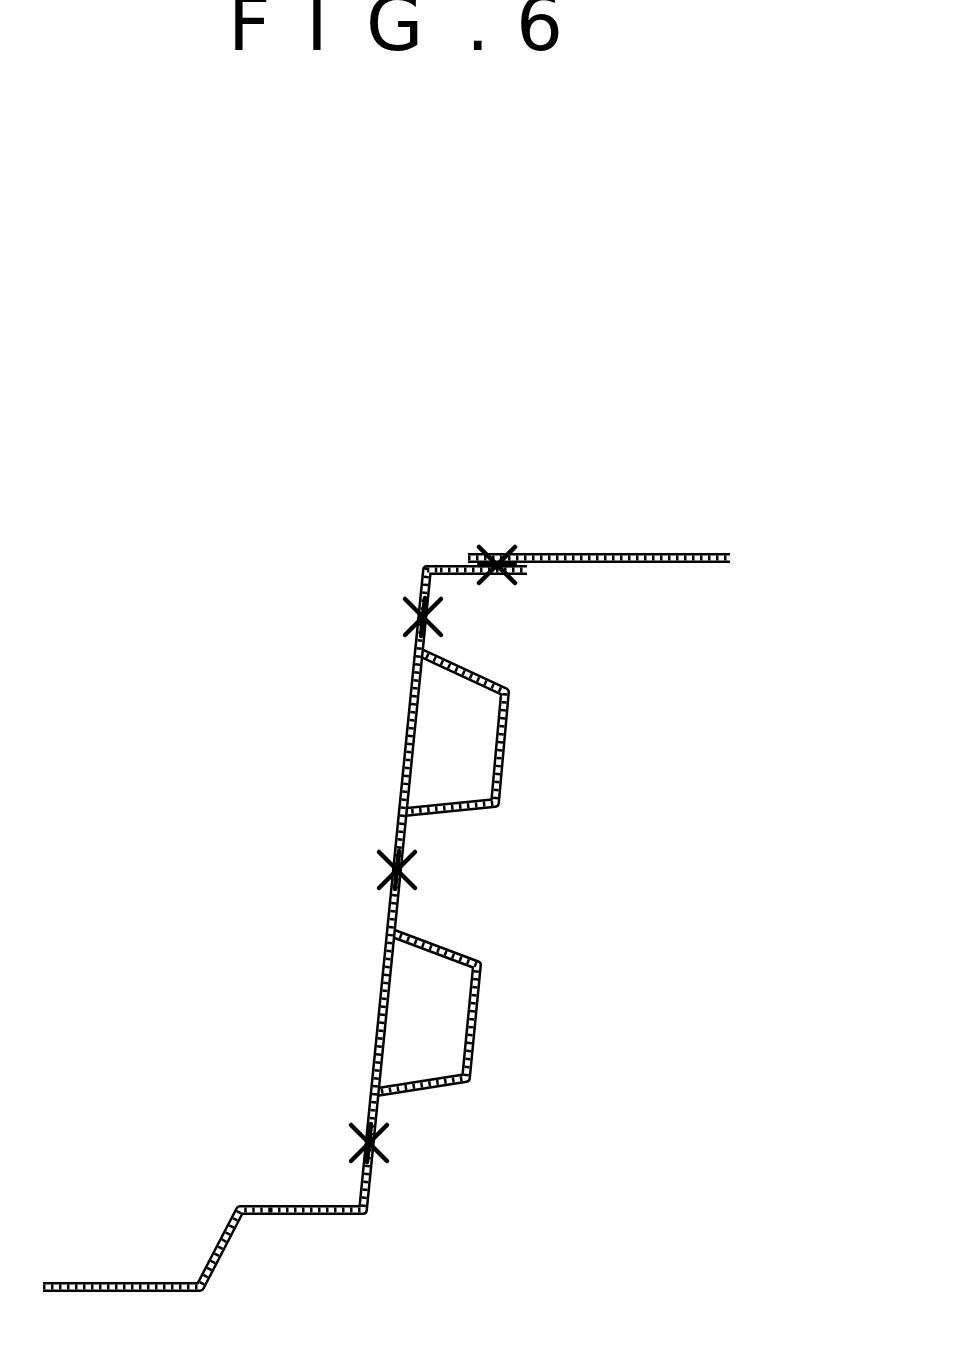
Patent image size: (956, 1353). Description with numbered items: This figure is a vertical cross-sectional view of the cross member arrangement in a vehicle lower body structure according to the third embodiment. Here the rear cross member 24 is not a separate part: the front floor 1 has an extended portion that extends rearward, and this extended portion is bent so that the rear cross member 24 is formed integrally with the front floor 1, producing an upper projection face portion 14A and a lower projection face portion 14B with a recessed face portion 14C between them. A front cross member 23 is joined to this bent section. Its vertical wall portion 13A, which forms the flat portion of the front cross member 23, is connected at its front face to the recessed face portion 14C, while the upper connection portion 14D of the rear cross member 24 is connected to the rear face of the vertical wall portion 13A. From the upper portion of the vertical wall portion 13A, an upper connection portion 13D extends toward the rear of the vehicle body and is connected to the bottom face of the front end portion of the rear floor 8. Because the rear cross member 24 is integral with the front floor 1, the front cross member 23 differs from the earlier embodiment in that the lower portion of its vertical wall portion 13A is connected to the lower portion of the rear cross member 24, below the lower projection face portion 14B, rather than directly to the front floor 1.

The front floor 1 is at (110, 1280).
The rear floor 8 is at (648, 553).
The vertical wall portion 13A is at (375, 1008).
The upper connection portion 13D is at (452, 565).
The upper projection face portion 14A is at (505, 748).
The lower projection face portion 14B is at (478, 1020).
The recessed face portion 14C is at (405, 900).
The upper connection portion 14D is at (430, 588).
The front cross member 23 is at (406, 580).
The rear cross member 24 is at (472, 1097).